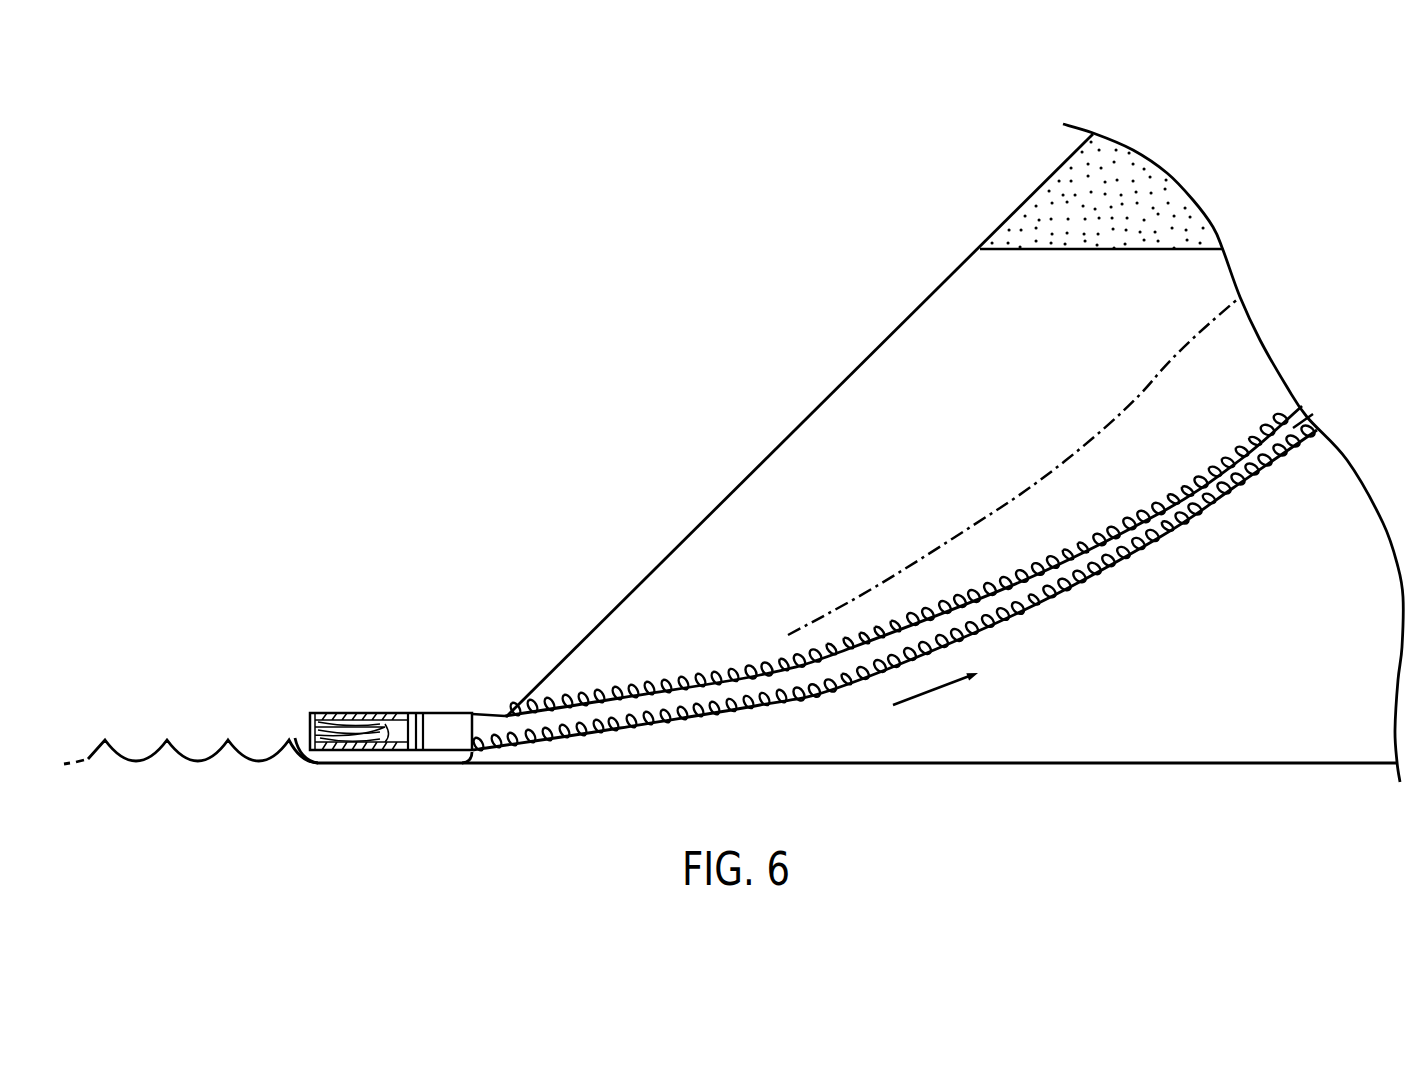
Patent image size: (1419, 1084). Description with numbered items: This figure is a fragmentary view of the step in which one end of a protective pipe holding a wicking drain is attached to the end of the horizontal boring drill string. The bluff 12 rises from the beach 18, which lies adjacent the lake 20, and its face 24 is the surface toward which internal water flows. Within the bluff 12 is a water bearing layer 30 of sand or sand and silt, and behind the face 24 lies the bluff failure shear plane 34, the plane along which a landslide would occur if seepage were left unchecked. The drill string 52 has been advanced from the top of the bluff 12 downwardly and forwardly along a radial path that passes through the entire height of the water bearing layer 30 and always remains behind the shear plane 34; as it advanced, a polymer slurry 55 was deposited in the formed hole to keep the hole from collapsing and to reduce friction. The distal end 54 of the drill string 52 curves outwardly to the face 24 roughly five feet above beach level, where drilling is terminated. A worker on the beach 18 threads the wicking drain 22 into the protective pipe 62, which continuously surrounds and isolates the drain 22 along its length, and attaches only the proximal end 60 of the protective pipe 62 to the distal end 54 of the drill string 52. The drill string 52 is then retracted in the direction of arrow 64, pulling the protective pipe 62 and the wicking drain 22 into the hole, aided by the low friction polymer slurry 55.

The bluff 12 is at (933, 205).
The beach 18 is at (418, 765).
The lake 20 is at (145, 763).
The wicking drain 22 is at (298, 730).
The face 24 is at (790, 437).
The water bearing layer 30 is at (1157, 197).
The bluff failure shear plane 34 is at (1027, 486).
The drill string 52 is at (1310, 416).
The distal end 54 is at (486, 730).
The polymer slurry 55 is at (1112, 577).
The proximal end 60 is at (445, 712).
The protective pipe 62 is at (357, 705).
The arrow 64 is at (937, 690).